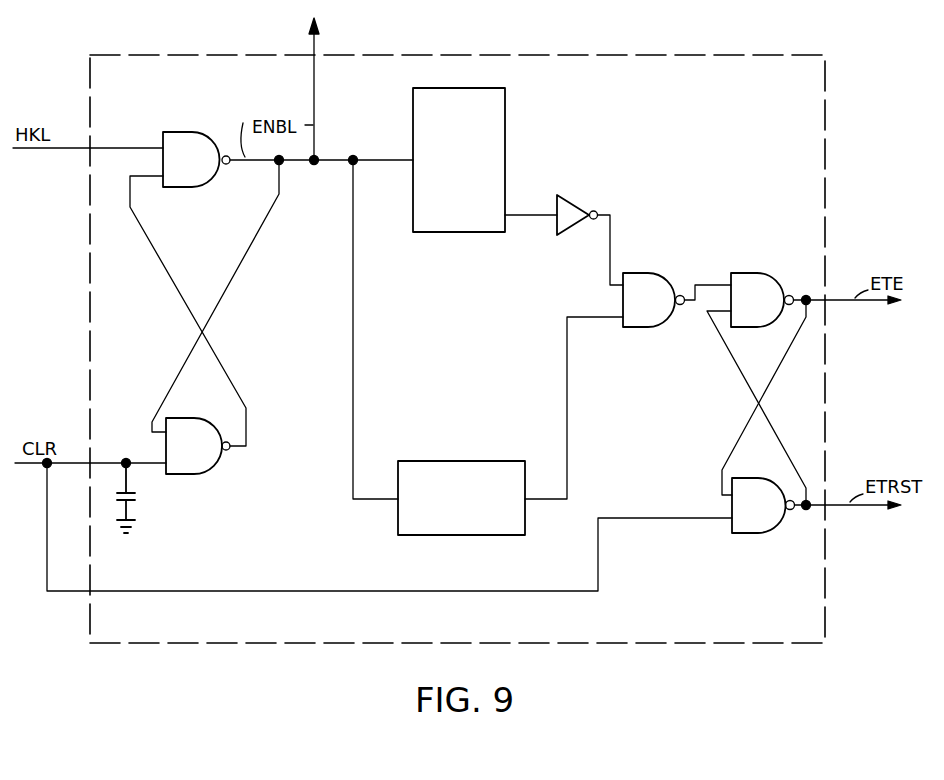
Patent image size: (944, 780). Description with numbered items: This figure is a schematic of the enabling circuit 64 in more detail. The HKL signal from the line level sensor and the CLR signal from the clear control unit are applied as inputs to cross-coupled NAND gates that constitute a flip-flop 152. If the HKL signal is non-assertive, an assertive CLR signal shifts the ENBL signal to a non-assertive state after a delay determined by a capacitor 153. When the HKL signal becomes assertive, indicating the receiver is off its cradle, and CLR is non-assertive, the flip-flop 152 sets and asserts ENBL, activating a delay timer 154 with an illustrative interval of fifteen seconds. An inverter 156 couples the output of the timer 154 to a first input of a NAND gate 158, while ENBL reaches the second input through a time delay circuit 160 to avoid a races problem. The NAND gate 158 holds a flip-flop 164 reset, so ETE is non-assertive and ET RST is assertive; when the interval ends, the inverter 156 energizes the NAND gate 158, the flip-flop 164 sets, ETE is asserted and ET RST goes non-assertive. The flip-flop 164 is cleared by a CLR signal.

The enabling circuit 64 is at (710, 65).
The flip-flop 152 is at (228, 322).
The capacitor 153 is at (136, 498).
The delay timer 154 is at (500, 120).
The inverter 156 is at (571, 208).
The NAND gate 158 is at (655, 280).
The time delay circuit 160 is at (464, 477).
The flip-flop 164 is at (728, 370).